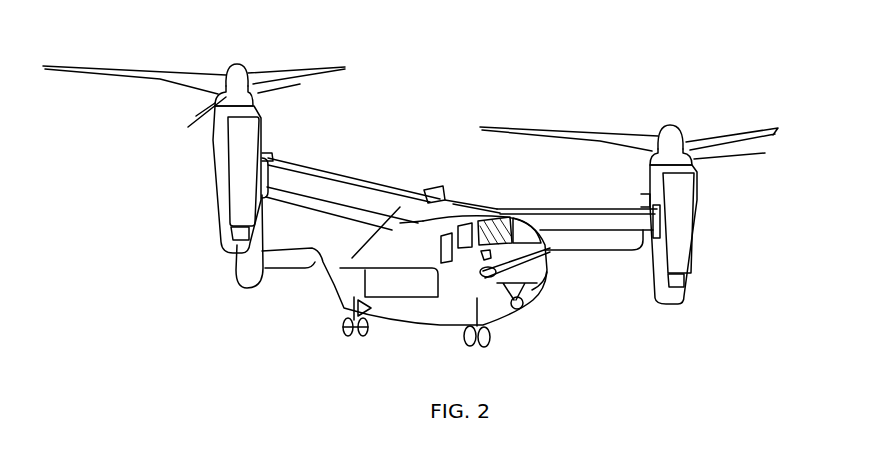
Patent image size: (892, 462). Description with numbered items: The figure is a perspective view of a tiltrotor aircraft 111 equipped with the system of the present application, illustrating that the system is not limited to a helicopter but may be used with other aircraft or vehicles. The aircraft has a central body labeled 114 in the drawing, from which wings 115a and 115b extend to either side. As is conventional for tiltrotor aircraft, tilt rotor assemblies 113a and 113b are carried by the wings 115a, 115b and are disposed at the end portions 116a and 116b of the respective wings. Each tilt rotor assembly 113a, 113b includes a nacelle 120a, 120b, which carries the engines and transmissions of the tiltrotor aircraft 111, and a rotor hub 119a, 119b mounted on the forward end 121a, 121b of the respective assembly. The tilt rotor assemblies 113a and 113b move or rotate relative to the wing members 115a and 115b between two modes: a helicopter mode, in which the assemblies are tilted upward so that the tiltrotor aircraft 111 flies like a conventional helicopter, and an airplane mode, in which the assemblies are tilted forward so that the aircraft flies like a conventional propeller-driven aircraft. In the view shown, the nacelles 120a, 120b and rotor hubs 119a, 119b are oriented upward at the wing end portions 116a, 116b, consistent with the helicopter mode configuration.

The tiltrotor aircraft 111 is at (308, 302).
The tilt rotor assembly 113a is at (703, 242).
The tilt rotor assembly 113b is at (200, 195).
The fuselage 114 is at (433, 327).
The wing 115a is at (567, 205).
The wing 115b is at (337, 177).
The end portion 116a is at (640, 262).
The end portion 116b is at (279, 152).
The rotor hub 119a is at (688, 134).
The rotor hub 119b is at (227, 75).
The nacelle 120a is at (682, 283).
The nacelle 120b is at (215, 247).
The forward end 121a is at (693, 167).
The forward end 121b is at (212, 106).